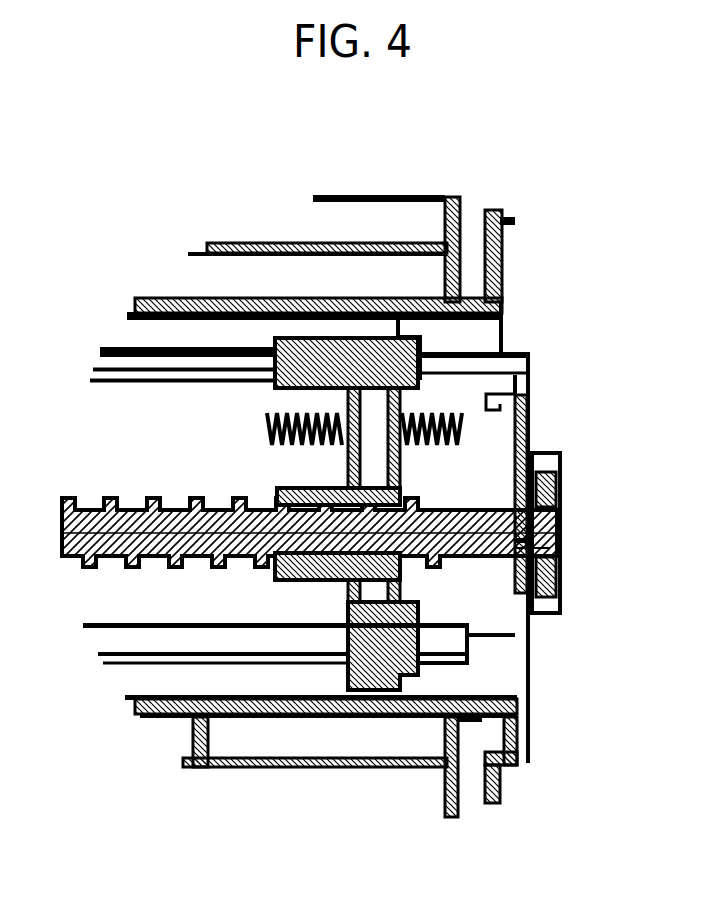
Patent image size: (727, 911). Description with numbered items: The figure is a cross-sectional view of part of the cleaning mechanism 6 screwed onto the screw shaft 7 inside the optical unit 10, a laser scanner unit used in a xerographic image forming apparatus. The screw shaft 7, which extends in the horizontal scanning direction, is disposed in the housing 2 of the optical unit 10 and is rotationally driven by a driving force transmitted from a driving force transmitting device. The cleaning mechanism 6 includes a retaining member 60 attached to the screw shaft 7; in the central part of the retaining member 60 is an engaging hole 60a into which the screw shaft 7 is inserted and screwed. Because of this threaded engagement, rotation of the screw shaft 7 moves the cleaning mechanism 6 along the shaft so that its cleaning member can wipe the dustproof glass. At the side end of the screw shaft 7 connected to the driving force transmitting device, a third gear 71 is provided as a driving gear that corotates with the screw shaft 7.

The optical unit 10 is at (527, 193).
The housing 2 is at (500, 303).
The cleaning mechanism 6 is at (428, 340).
The screw shaft 7 is at (180, 527).
The retaining member 60 is at (380, 667).
The engaging hole 60a is at (312, 553).
The third gear 71 is at (560, 458).